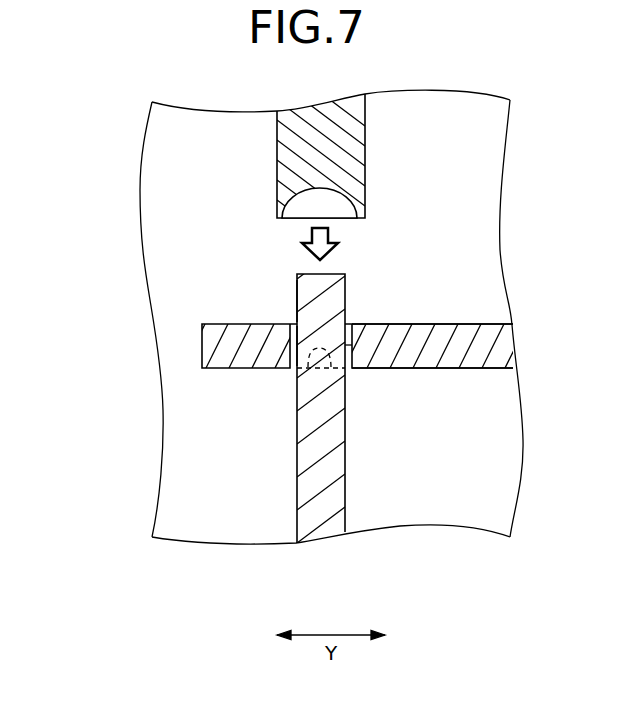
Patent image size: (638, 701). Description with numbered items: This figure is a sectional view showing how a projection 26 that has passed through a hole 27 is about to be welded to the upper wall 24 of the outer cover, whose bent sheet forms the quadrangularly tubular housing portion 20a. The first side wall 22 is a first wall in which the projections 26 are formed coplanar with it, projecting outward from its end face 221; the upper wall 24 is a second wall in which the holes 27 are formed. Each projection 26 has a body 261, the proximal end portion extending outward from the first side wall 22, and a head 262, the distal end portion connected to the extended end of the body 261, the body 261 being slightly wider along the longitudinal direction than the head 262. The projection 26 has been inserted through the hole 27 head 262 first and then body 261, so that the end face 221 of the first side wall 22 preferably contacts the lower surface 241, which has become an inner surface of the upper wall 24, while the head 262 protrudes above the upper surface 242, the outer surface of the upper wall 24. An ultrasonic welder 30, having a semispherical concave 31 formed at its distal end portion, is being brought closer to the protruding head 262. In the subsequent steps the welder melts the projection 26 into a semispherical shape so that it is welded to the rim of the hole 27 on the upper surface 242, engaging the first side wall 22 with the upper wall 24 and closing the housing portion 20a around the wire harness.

The housing portion 20a is at (463, 502).
The ultrasonic welder 30 is at (368, 133).
The concave 31 is at (362, 190).
The first side wall 22 is at (305, 460).
The upper wall 24 is at (371, 345).
The upper surface 242 is at (437, 324).
The lower surface 241 is at (437, 368).
The hole 27 is at (338, 353).
The projection 26 is at (172, 323).
The head 262 is at (305, 292).
The body 261 is at (303, 340).
The end face 221 is at (315, 355).